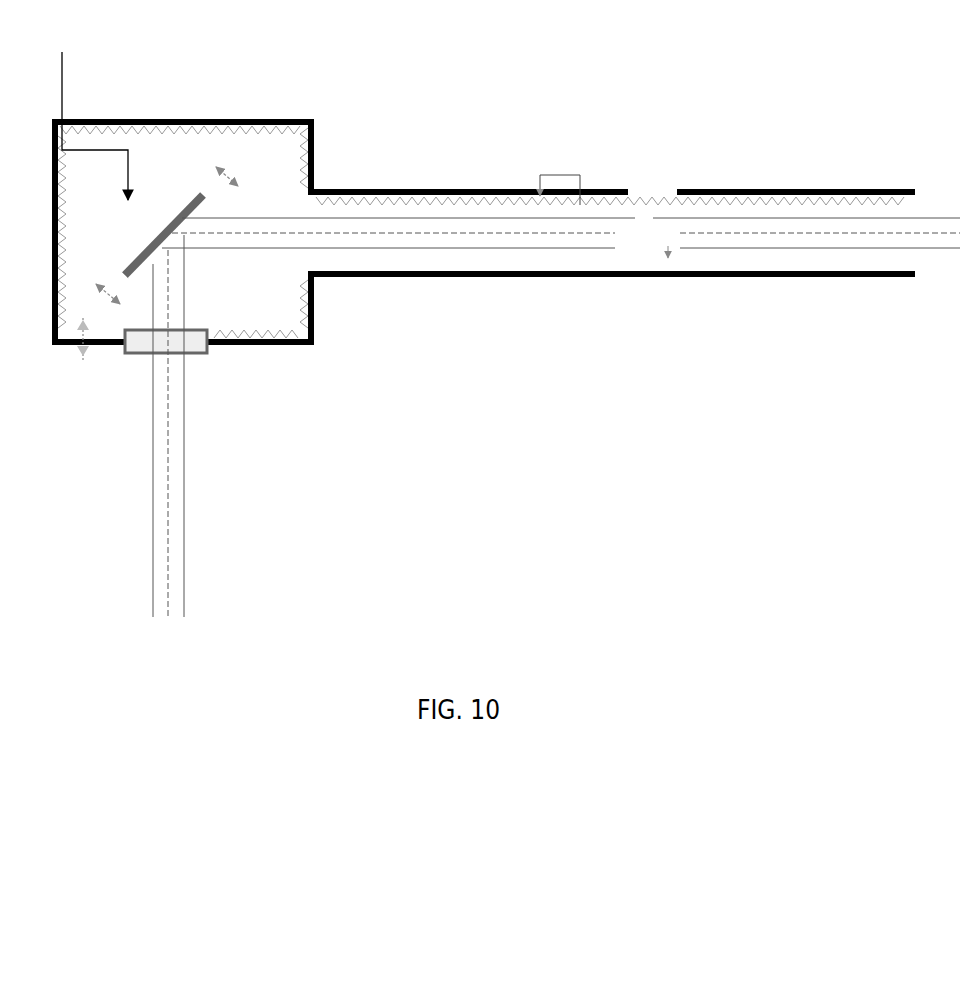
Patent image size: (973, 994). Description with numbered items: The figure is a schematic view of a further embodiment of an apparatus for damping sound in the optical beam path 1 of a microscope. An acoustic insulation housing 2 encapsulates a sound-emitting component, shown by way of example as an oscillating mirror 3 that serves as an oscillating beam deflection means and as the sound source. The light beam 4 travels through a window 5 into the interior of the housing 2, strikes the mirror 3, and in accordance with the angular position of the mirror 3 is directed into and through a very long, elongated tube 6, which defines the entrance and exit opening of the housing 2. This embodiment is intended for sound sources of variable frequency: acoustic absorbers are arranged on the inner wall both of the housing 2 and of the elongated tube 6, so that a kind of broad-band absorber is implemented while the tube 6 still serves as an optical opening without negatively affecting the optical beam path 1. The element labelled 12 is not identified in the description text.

The optical beam path 1 is at (668, 221).
The acoustic insulation housing 2 is at (183, 107).
The oscillating mirror 3 is at (92, 110).
The light beam 4 is at (932, 200).
The window 5 is at (166, 340).
The tube 6 is at (488, 183).
The absorbing coating 12 is at (40, 238).